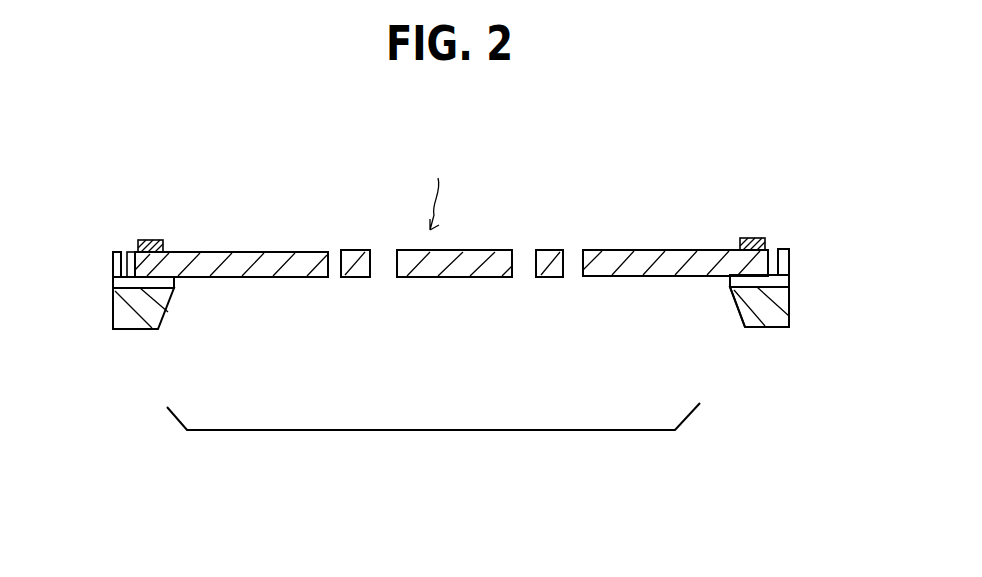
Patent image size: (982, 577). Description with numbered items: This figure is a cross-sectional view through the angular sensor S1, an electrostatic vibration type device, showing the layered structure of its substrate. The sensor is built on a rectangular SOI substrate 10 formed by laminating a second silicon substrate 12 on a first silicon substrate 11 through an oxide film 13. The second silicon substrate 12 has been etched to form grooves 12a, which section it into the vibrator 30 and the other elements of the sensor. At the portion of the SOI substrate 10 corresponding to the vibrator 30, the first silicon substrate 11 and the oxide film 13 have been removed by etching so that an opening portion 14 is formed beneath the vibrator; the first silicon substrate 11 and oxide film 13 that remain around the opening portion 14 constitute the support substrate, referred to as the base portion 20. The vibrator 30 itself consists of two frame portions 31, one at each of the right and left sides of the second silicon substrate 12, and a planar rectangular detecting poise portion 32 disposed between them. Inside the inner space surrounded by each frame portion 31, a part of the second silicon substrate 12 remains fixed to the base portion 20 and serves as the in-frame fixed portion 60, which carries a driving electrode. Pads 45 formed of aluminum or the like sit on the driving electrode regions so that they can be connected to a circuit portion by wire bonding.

The SOI substrate 10 is at (767, 338).
The first silicon substrate 11 is at (777, 317).
The second silicon substrate 12 is at (790, 253).
The grooves 12a is at (128, 258).
The oxide film 13 is at (780, 279).
The opening portion 14 is at (728, 280).
The base portion 20 is at (103, 278).
The vibrator 30 is at (554, 244).
The frame portions 31 is at (355, 277).
The detecting poise portion 32 is at (453, 277).
The pads 45 is at (153, 240).
The in-frame fixed portion 60 is at (257, 252).
The angular sensor S1 is at (463, 175).